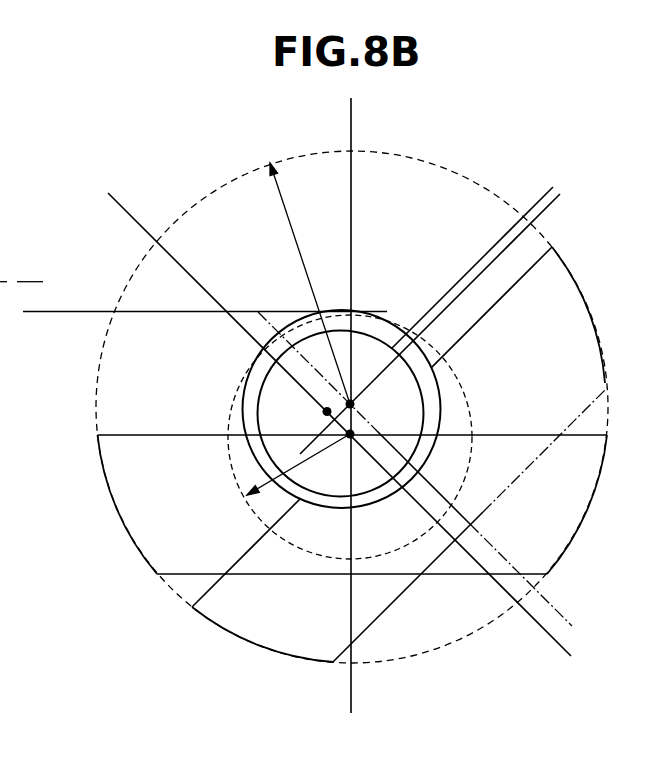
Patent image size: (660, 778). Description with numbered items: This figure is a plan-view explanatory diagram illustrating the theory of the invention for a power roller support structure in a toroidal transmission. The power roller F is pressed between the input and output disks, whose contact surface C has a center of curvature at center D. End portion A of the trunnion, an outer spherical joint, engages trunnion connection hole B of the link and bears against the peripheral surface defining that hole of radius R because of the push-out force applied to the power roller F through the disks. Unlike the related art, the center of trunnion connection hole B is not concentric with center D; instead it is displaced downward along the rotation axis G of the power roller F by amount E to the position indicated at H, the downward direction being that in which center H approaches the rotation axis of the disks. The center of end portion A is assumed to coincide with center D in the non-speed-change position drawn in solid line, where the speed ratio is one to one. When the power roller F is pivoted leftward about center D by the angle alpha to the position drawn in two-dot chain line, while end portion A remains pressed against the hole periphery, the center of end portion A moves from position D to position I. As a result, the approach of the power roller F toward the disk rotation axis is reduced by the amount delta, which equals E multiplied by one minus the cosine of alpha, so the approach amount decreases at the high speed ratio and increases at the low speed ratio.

The end portion of the trunnion A is at (443, 413).
The trunnion connection hole B is at (445, 362).
The contact surface of the disks C is at (446, 641).
The center of curvature of the contact surface D is at (356, 405).
The amount of displacement E is at (35, 243).
The power roller F is at (153, 433).
The rotation axis of the power roller G is at (352, 697).
The displaced center position H is at (345, 434).
The displaced position of trunnion end portion center I is at (322, 411).
The radius of the trunnion connection hole R is at (301, 465).